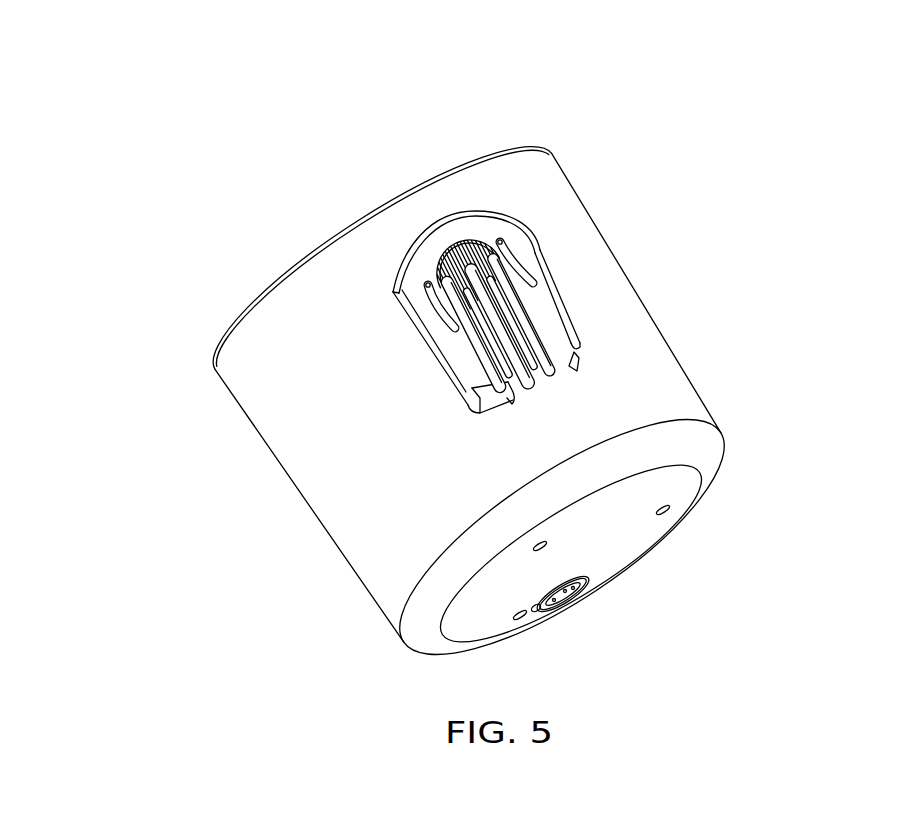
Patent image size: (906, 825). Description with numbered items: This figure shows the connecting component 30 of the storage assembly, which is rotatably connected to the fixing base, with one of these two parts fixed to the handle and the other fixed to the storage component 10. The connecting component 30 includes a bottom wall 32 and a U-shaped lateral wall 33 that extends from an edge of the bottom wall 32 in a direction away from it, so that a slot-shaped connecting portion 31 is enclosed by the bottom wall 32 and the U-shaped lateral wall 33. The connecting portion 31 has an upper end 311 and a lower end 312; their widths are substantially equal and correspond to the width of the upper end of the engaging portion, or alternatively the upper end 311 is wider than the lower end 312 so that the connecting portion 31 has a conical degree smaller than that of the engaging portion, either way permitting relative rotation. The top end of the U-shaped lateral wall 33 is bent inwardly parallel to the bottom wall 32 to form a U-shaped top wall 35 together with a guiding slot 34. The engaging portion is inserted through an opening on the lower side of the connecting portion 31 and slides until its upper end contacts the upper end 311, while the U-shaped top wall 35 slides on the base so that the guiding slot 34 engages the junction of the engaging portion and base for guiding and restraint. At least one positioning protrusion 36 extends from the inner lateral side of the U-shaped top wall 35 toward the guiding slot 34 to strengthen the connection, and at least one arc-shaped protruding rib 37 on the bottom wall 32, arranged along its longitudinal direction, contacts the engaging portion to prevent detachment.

The storage component 10 is at (380, 565).
The connecting component 30 is at (104, 32).
The connecting portion 31 is at (505, 413).
The upper end of the connecting portion 311 is at (401, 228).
The lower end of the connecting portion 312 is at (426, 406).
The bottom wall 32 is at (572, 367).
The U-shaped lateral wall 33 is at (415, 320).
The guiding slot 34 is at (454, 233).
The U-shaped top wall 35 is at (565, 332).
The positioning protrusion 36 is at (505, 248).
The protruding rib 37 is at (500, 333).